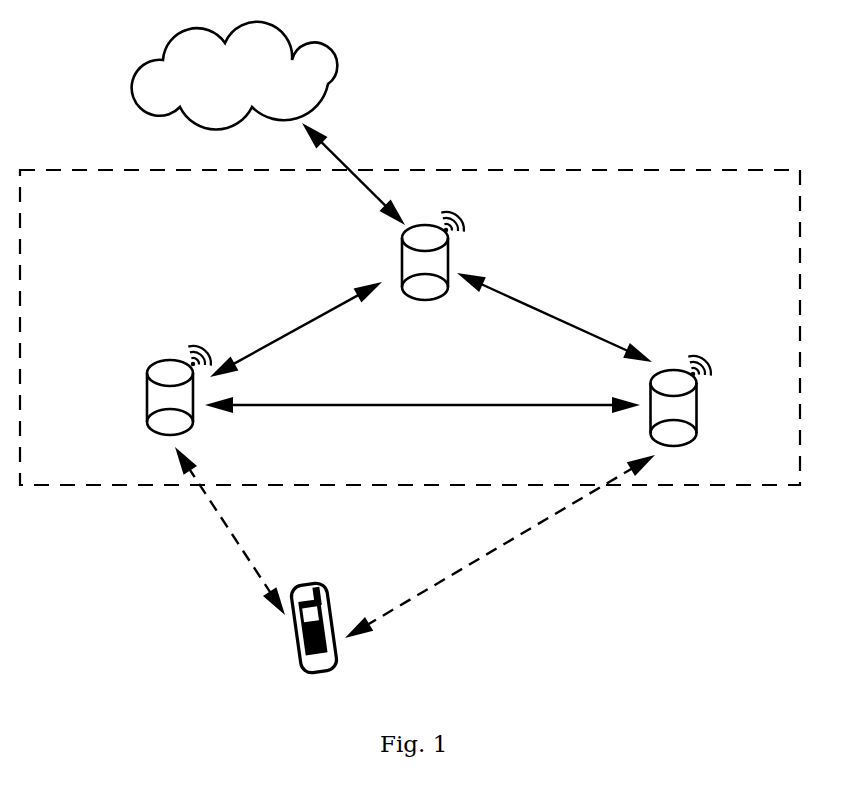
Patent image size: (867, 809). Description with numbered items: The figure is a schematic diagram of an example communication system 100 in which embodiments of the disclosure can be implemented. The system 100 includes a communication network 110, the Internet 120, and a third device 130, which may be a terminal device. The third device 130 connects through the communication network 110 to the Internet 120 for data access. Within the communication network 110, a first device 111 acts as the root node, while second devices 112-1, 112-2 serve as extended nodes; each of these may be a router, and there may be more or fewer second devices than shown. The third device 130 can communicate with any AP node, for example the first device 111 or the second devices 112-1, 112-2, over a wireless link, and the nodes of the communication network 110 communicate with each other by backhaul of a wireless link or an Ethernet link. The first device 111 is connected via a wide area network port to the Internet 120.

The communication system 100 is at (690, 47).
The communication network 110 is at (677, 168).
The first device 111 is at (447, 250).
The second device 112-1 is at (147, 390).
The second device 112-2 is at (697, 402).
The Internet 120 is at (335, 56).
The third device 130 is at (335, 618).